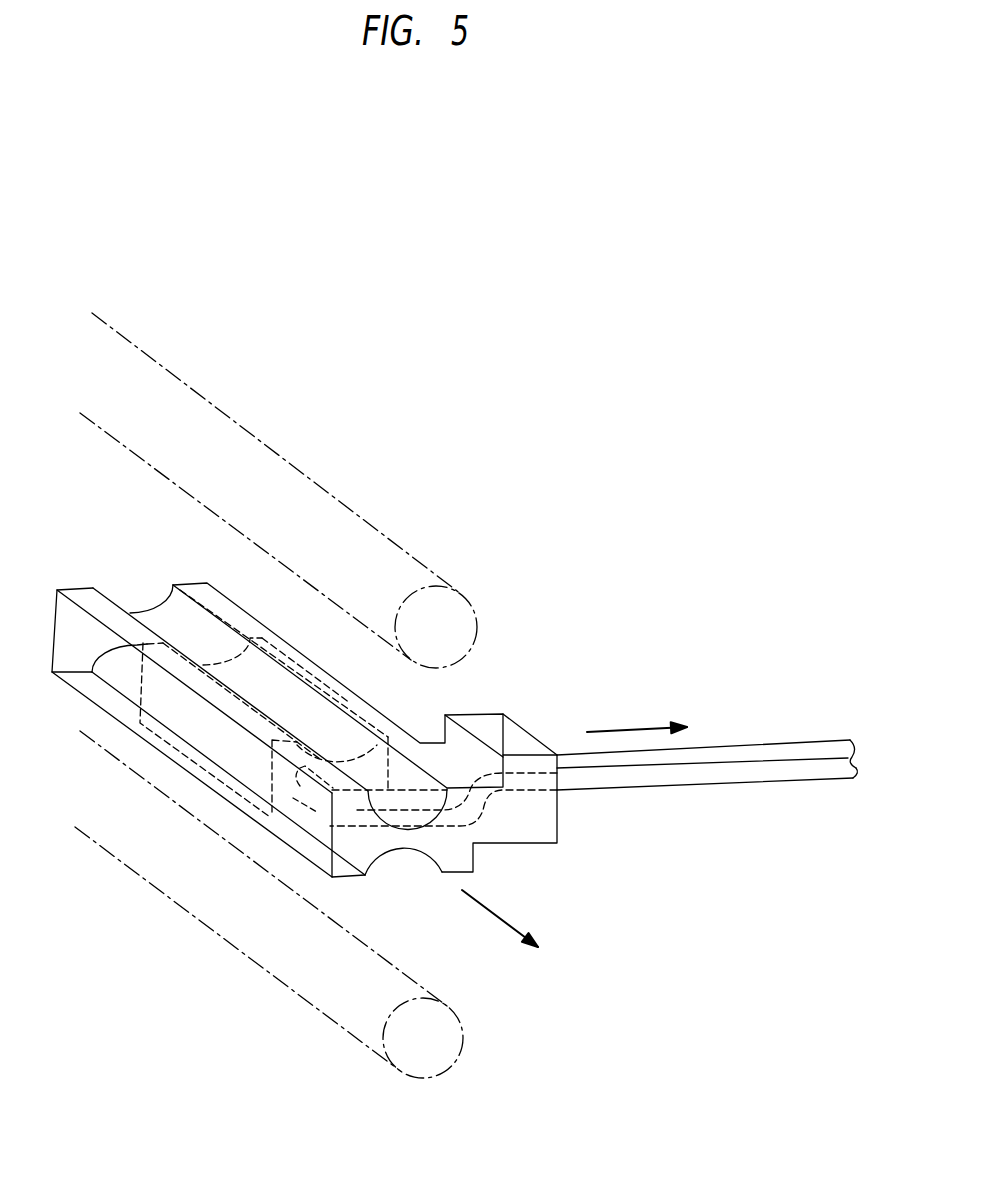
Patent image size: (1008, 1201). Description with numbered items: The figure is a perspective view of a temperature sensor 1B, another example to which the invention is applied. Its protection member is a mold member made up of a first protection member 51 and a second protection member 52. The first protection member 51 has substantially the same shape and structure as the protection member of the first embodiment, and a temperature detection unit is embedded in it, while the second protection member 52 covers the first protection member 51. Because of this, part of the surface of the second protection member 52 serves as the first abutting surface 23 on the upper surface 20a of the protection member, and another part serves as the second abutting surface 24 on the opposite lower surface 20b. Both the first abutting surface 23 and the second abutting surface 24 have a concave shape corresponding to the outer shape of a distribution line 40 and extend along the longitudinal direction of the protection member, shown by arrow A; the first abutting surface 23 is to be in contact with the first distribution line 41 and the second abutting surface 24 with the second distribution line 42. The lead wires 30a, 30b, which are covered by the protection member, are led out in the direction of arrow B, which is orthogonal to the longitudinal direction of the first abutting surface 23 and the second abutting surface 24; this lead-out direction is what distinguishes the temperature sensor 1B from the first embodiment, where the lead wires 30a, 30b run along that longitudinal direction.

The temperature sensor 1B is at (69, 204).
The upper surface 20a is at (403, 738).
The lower surface 20b is at (183, 783).
The first abutting surface 23 is at (197, 635).
The second abutting surface 24 is at (430, 866).
The lead wire 30a is at (828, 738).
The lead wire 30b is at (803, 787).
The distribution line 40 is at (276, 742).
The first distribution line 41 is at (228, 417).
The second distribution line 42 is at (368, 1055).
The first protection member 51 is at (273, 820).
The second protection member 52 is at (310, 858).